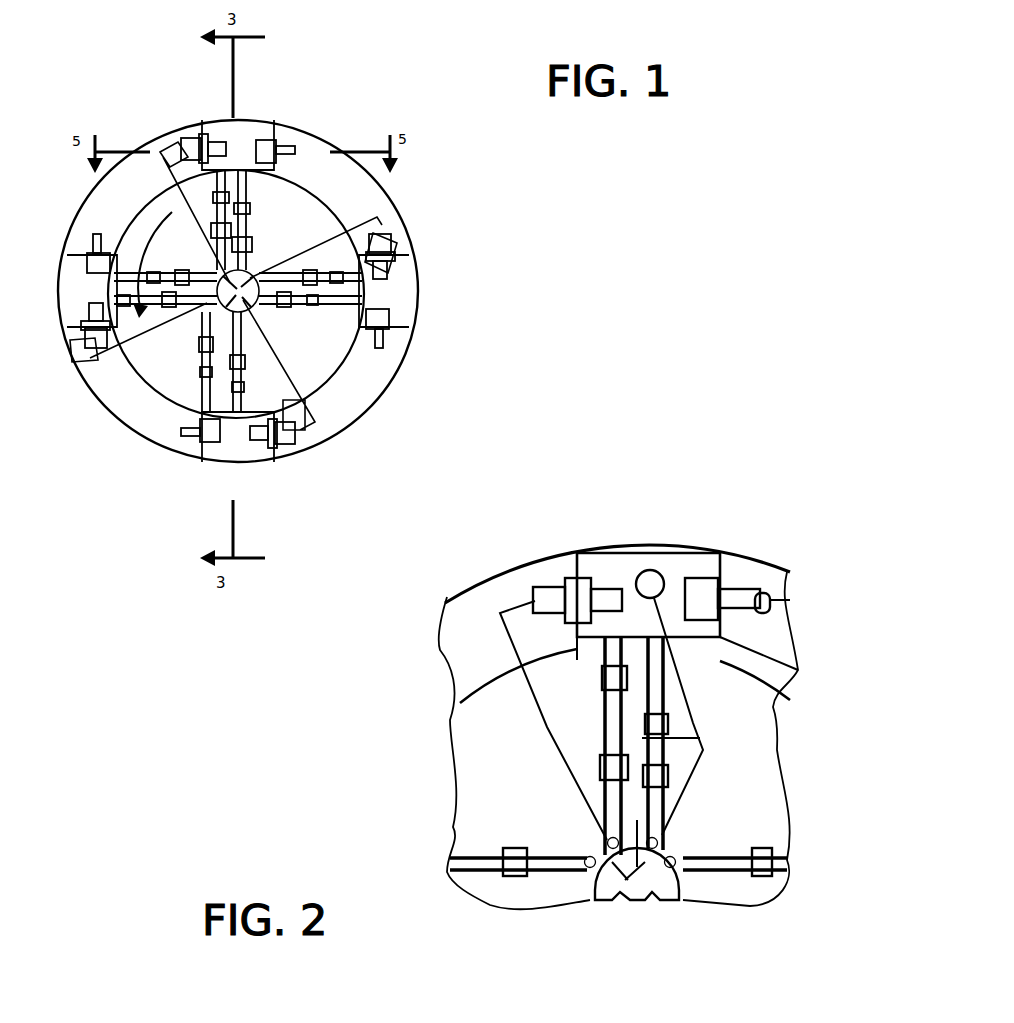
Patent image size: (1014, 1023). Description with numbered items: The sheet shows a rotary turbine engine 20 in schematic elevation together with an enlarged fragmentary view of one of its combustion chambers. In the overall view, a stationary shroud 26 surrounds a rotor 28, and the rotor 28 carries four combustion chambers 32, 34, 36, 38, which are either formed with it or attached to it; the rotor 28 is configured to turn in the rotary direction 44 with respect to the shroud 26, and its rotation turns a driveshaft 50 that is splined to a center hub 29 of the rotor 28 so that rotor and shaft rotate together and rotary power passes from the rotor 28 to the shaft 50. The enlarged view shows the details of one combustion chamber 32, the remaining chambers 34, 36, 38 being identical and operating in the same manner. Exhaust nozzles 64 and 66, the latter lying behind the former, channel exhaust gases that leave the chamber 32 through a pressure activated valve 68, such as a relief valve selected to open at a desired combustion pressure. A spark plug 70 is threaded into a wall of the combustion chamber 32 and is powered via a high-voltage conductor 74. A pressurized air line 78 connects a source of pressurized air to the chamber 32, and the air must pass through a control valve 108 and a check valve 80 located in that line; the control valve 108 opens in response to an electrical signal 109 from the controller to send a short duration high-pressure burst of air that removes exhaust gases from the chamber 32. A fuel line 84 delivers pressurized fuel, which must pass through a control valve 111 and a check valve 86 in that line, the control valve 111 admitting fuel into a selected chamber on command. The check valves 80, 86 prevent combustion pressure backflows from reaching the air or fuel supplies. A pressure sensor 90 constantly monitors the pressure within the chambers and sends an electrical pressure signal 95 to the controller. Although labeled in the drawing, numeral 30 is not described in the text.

In FIG. 1, the rotary engine 20 is at (188, 98).
In FIG. 1, the shroud 26 is at (284, 122).
In FIG. 2, the shroud 26 is at (560, 557).
In FIG. 1, the rotor 28 is at (322, 354).
In FIG. 2, the center hub 29 is at (690, 890).
In FIG. 1, the outer ring 30 is at (350, 190).
In FIG. 1, the combustion chamber 32 is at (234, 126).
In FIG. 2, the combustion chamber 32 is at (627, 557).
In FIG. 1, the combustion chamber 34 is at (402, 294).
In FIG. 1, the combustion chamber 36 is at (240, 456).
In FIG. 1, the combustion chamber 38 is at (70, 345).
In FIG. 1, the rotary direction 44 is at (158, 265).
In FIG. 1, the driveshaft 50 is at (230, 302).
In FIG. 2, the driveshaft 50 is at (628, 880).
In FIG. 2, the exhaust nozzle 64 is at (740, 585).
In FIG. 2, the exhaust nozzle 66 is at (790, 600).
In FIG. 2, the pressure activated valve 68 is at (720, 587).
In FIG. 2, the spark plug 70 is at (553, 587).
In FIG. 2, the high-voltage conductor 74 is at (548, 717).
In FIG. 2, the pressurized air line 78 is at (605, 738).
In FIG. 2, the check valve 80 is at (604, 674).
In FIG. 2, the fuel line 84 is at (665, 744).
In FIG. 2, the check valve 86 is at (668, 722).
In FIG. 2, the pressure sensor 90 is at (657, 572).
In FIG. 2, the electrical pressure signal 95 is at (645, 820).
In FIG. 2, the control valve 108 is at (605, 763).
In FIG. 2, the electrical signal 109 is at (655, 803).
In FIG. 2, the control valve 111 is at (668, 778).